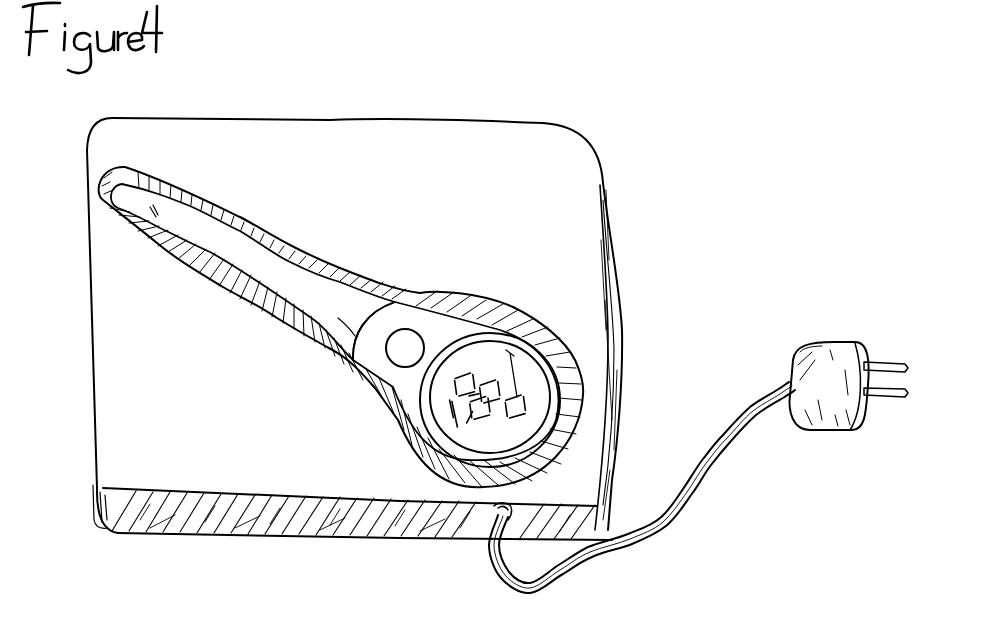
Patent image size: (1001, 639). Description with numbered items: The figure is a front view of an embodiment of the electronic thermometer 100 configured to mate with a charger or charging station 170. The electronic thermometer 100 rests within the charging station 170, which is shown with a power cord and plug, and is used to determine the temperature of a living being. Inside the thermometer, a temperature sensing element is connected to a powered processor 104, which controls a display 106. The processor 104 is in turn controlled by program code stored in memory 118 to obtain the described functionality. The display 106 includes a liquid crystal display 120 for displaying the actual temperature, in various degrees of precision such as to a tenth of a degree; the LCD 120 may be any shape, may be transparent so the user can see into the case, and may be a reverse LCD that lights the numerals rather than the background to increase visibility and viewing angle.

The electronic thermometer 100 is at (277, 228).
The processor 104 is at (341, 300).
The display 106 is at (530, 382).
The memory 118 is at (337, 320).
The liquid crystal display (LCD) 120 is at (480, 410).
The charging station 170 is at (653, 291).